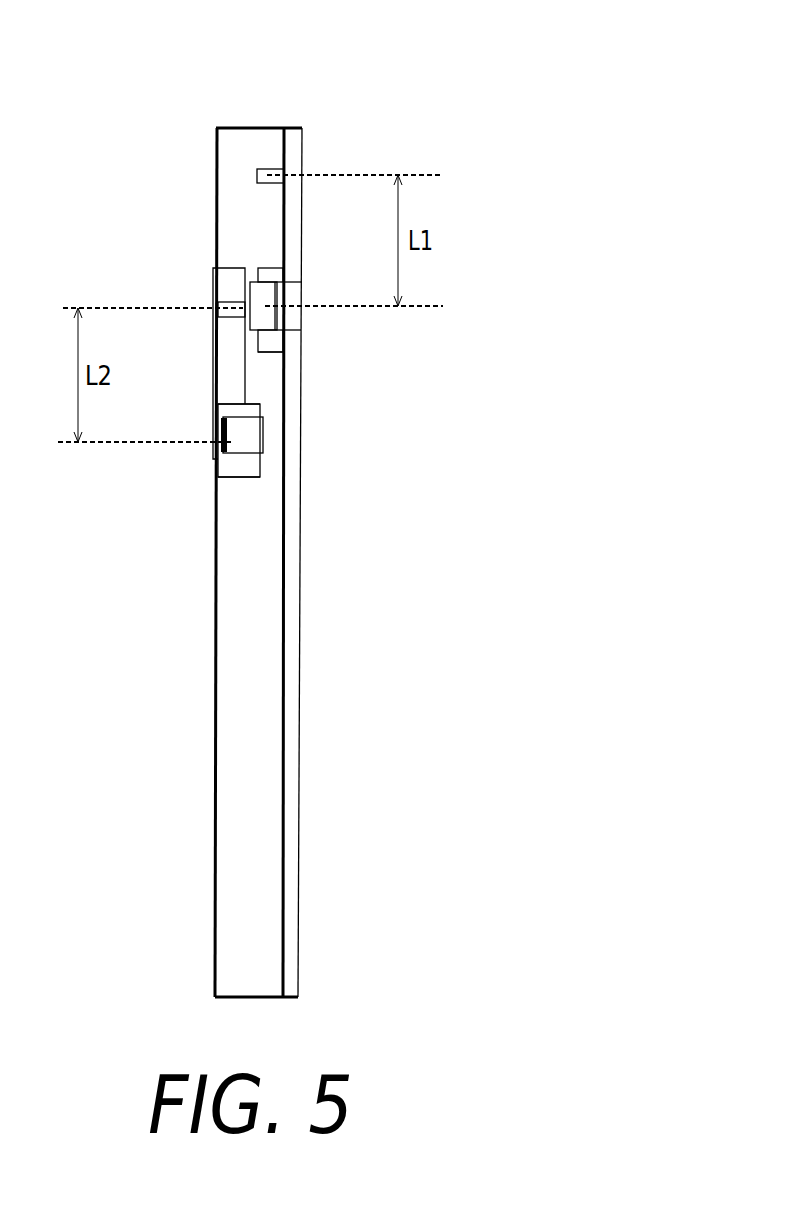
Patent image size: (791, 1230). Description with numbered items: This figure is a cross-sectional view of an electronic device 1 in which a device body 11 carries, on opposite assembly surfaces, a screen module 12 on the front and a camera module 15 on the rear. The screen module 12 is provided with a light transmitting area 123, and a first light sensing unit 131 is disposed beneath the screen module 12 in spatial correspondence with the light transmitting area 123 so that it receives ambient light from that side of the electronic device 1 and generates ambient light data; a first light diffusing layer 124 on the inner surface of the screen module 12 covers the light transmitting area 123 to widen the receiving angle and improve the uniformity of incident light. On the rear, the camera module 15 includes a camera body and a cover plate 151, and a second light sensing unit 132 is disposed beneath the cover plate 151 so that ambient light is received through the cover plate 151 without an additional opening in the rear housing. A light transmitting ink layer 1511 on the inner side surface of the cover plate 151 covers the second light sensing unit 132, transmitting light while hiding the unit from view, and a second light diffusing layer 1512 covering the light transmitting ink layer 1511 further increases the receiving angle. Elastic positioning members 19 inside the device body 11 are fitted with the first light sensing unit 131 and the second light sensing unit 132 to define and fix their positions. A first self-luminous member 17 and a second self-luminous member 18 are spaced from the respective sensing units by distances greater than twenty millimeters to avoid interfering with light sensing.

The electronic device 1 is at (287, 507).
The device body 11 is at (237, 623).
The screen module 12 is at (292, 772).
The light transmitting area 123 is at (290, 297).
The first light diffusing layer 124 is at (277, 310).
The first light sensing unit 131 is at (264, 304).
The second light sensing unit 132 is at (247, 438).
The camera module 15 is at (230, 405).
The cover plate 151 is at (216, 292).
The light transmitting ink layer 1511 is at (222, 450).
The second light diffusing layer 1512 is at (222, 450).
The first self-luminous member 17 is at (273, 172).
The second self-luminous member 18 is at (233, 314).
The elastic positioning member 19 is at (270, 352).